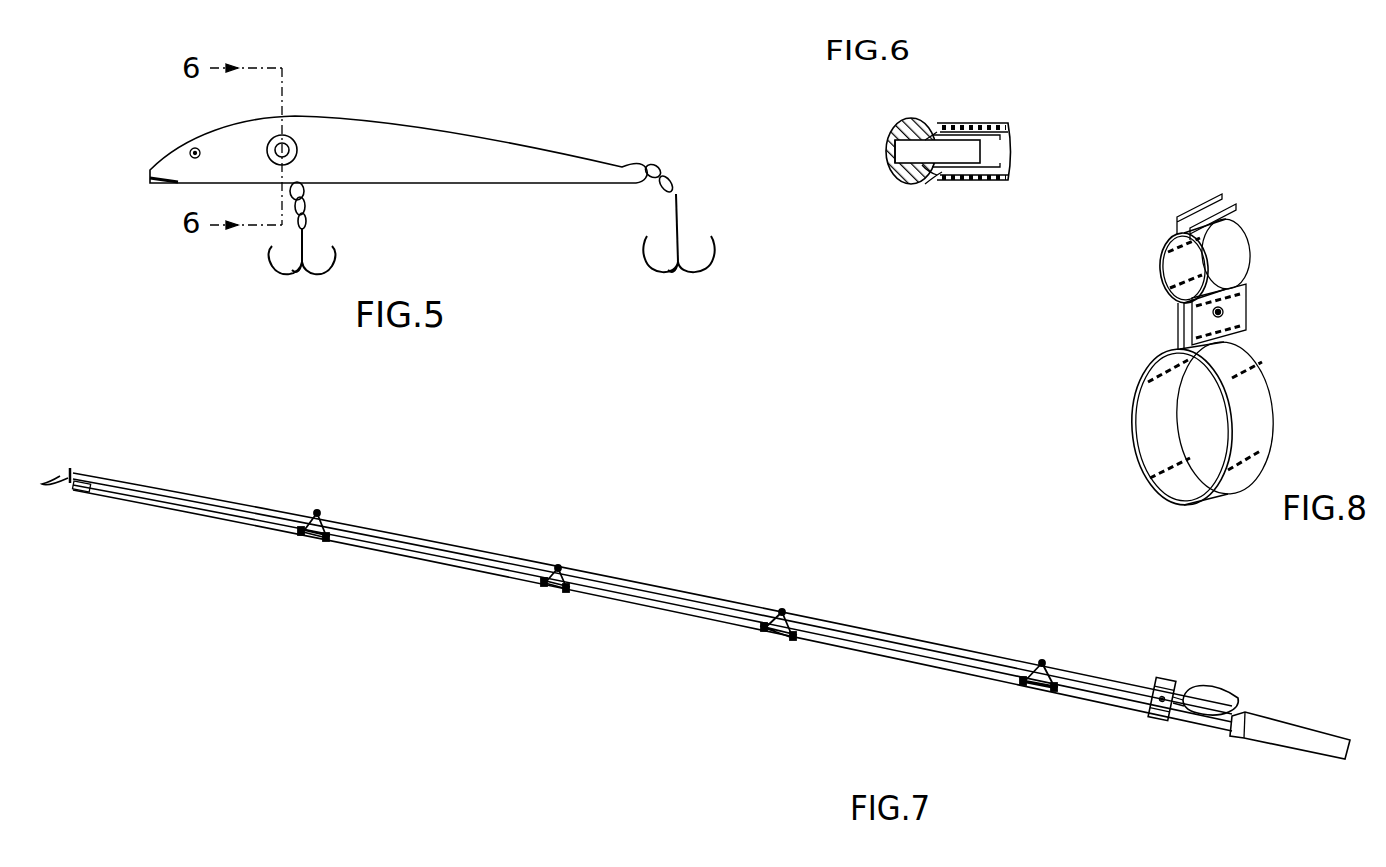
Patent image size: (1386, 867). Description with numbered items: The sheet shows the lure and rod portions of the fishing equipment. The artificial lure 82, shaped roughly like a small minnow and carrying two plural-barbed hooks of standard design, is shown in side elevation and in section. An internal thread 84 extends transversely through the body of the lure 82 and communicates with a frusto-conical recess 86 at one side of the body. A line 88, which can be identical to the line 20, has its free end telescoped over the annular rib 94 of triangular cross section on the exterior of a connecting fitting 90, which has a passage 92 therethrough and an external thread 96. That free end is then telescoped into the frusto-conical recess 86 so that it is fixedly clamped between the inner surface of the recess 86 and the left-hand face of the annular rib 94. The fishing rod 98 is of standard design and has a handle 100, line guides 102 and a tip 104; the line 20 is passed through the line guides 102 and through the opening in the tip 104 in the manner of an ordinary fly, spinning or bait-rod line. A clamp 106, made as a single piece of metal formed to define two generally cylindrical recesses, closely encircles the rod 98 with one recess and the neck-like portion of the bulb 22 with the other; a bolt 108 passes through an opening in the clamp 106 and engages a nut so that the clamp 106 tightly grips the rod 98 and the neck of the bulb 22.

In FIG. 7, the line 20 is at (44, 483).
In FIG. 7, the bulb 22 is at (1222, 686).
In FIG. 5, the artificial lure 82 is at (480, 116).
In FIG. 6, the artificial lure 82 is at (898, 120).
In FIG. 6, the internal thread 84 is at (903, 182).
In FIG. 6, the frusto-conical recess 86 is at (931, 180).
In FIG. 6, the line 88 is at (1006, 124).
In FIG. 5, the connecting fitting 90 is at (297, 139).
In FIG. 6, the connecting fitting 90 is at (993, 152).
In FIG. 5, the passage 92 is at (274, 149).
In FIG. 6, the passage 92 is at (966, 172).
In FIG. 6, the annular rib 94 is at (938, 126).
In FIG. 6, the external thread 96 is at (896, 160).
In FIG. 7, the fishing rod 98 is at (665, 632).
In FIG. 7, the handle 100 is at (1326, 748).
In FIG. 7, the line guides 102 is at (322, 516).
In FIG. 7, the tip 104 is at (74, 491).
In FIG. 8, the clamp 106 is at (1258, 372).
In FIG. 7, the clamp 106 is at (1155, 719).
In FIG. 7, the bolt 108 is at (1150, 704).